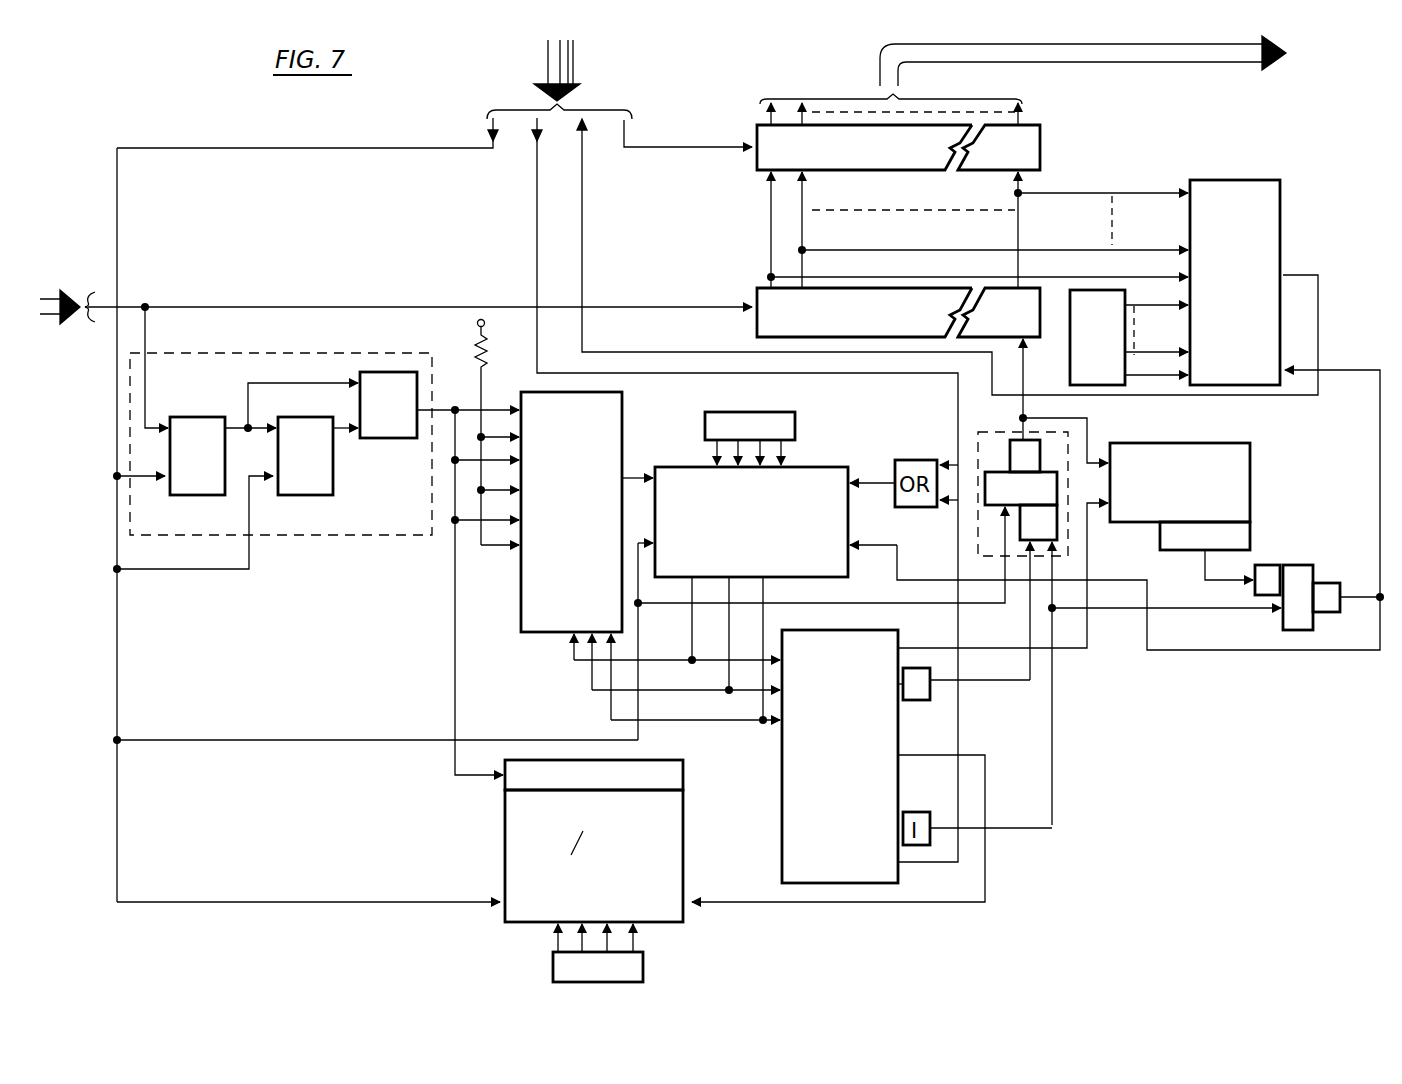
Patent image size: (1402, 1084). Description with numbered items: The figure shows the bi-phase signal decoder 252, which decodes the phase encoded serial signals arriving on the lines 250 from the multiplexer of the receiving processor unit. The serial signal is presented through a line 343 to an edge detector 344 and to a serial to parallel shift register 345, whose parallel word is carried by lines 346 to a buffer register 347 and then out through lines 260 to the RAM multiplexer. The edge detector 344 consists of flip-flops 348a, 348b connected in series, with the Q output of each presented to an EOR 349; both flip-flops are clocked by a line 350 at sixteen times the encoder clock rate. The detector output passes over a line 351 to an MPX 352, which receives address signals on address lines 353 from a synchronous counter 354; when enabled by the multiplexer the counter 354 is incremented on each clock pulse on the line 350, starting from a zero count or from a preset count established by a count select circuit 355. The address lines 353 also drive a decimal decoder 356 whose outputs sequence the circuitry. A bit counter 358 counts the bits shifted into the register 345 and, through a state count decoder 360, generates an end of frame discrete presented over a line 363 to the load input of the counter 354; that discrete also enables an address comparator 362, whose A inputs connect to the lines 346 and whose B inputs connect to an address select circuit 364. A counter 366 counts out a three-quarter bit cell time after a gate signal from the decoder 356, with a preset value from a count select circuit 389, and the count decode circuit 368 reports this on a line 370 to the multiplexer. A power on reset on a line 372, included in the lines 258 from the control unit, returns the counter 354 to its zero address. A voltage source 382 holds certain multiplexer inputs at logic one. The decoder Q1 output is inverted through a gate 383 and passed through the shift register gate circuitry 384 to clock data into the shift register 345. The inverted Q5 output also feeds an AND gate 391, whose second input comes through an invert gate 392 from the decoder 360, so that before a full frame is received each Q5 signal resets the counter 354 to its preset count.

The lines 250 is at (57, 294).
The decoder 252 is at (190, 126).
The lines 258 is at (548, 63).
The lines 260 is at (1148, 62).
The line 343 is at (610, 307).
The edge detector 344 is at (244, 353).
The serial to parallel shift register 345 is at (757, 322).
The lines 346 is at (802, 210).
The buffer register 347 is at (760, 166).
The flip-flop 348a is at (191, 496).
The flip-flop 348b is at (304, 496).
The EOR 349 is at (389, 440).
The line 350 is at (456, 150).
The line 351 is at (440, 405).
The MPX 352 is at (622, 396).
The address lines 353 is at (762, 617).
The synchronous counter 354 is at (810, 467).
The count select circuit 355 is at (724, 413).
The decimal decoder 356 is at (836, 641).
The bit counter 358 is at (1251, 457).
The state count decoder 360 is at (1251, 527).
The address comparator 362 is at (1211, 181).
The line 363 is at (1163, 652).
The address select circuit 364 is at (1070, 369).
The counter 366 is at (688, 860).
The count decode circuit 368 is at (683, 781).
The line 370 is at (455, 653).
The line 372 is at (537, 213).
The voltage source 382 is at (474, 326).
The gate 383 is at (907, 702).
The shift register gate circuitry 384 is at (1004, 430).
The count select circuit 389 is at (645, 956).
The AND gate 391 is at (1316, 578).
The invert gate 392 is at (1283, 566).